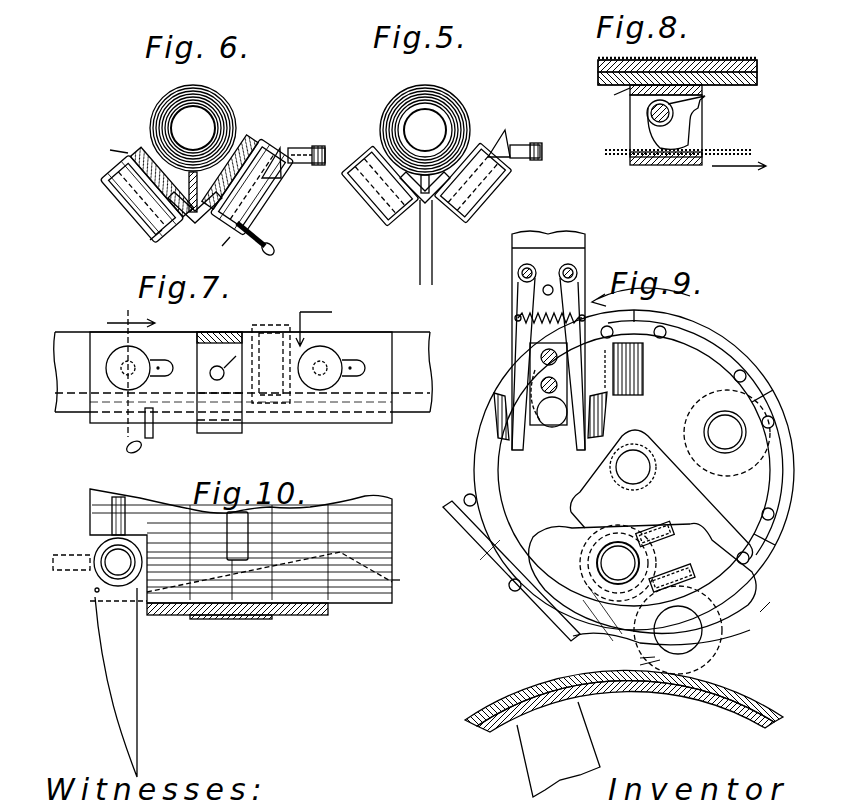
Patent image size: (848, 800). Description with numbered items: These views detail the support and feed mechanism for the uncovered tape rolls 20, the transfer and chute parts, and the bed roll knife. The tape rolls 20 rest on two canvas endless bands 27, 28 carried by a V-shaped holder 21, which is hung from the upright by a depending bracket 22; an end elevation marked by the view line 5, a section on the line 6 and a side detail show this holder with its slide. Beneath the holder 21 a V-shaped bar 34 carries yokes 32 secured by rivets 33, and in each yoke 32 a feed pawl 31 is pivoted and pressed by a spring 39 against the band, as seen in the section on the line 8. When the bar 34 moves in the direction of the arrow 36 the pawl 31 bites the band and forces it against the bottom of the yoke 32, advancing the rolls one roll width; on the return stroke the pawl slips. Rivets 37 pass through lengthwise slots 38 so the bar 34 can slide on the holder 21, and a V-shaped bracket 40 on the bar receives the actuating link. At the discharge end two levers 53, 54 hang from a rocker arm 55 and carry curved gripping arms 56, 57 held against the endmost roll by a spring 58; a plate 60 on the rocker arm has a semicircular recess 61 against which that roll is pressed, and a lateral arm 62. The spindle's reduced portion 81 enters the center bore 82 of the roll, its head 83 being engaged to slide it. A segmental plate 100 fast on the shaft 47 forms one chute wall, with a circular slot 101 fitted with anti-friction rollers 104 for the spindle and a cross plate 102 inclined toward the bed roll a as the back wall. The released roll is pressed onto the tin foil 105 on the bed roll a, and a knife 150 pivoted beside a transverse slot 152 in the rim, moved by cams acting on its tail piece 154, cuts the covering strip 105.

In FIG. 6, the tape rolls 20 is at (228, 106).
In FIG. 5, the tape rolls 20 is at (458, 106).
In FIG. 9, the tape rolls 20 is at (578, 533).
In FIG. 6, the center bore 82 is at (193, 128).
In FIG. 5, the center bore 82 is at (425, 130).
In FIG. 6, the V-shaped holder 21 is at (266, 136).
In FIG. 8, the V-shaped holder 21 is at (757, 70).
In FIG. 7, the V-shaped holder 21 is at (424, 378).
In FIG. 5, the depending bracket 22 is at (433, 257).
In FIG. 6, the endless band 27 is at (240, 150).
In FIG. 5, the endless band 27 is at (488, 198).
In FIG. 8, the endless band 27 is at (738, 58).
In FIG. 6, the endless band 28 is at (150, 150).
In FIG. 5, the endless band 28 is at (372, 212).
In FIG. 8, the feed pawl 31 is at (690, 130).
In FIG. 6, the yoke 32 is at (180, 244).
In FIG. 8, the yoke 32 is at (640, 165).
In FIG. 8, the rivets 33 is at (612, 98).
In FIG. 6, the V-shaped bar 34 is at (110, 144).
In FIG. 8, the V-shaped bar 34 is at (740, 88).
In FIG. 7, the V-shaped bar 34 is at (392, 349).
In FIG. 8, the arrow 36 is at (740, 167).
In FIG. 6, the rivets 37 is at (120, 203).
In FIG. 7, the rivets 37 is at (108, 364).
In FIG. 7, the slots 38 is at (368, 358).
In FIG. 8, the springs 39 is at (680, 104).
In FIG. 7, the V-shaped bracket 40 is at (220, 433).
In FIG. 7, the section line 5 is at (232, 357).
In FIG. 7, the section line 6— 6 is at (131, 376).
In FIG. 7, the section line 8— 8 is at (302, 355).
In FIG. 9, the shaft 47 is at (626, 470).
In FIG. 9, the lever 53 is at (528, 343).
In FIG. 9, the lever 54 is at (585, 300).
In FIG. 9, the rocker arm 55 is at (585, 237).
In FIG. 9, the gripping arm 56 is at (494, 404).
In FIG. 9, the gripping arm 57 is at (608, 410).
In FIG. 9, the spring 58 is at (516, 316).
In FIG. 9, the plate 60 is at (535, 385).
In FIG. 9, the semicircular recess 61 is at (548, 428).
In FIG. 9, the lateral arm 62 is at (643, 378).
In FIG. 9, the reduced portion 81 is at (620, 548).
In FIG. 9, the head 83 is at (698, 420).
In FIG. 9, the segmental plate 100 is at (700, 498).
In FIG. 9, the circular slot 101 is at (590, 530).
In FIG. 9, the cross plate 102 is at (475, 558).
In FIG. 9, the anti-friction rollers 104 is at (668, 514).
In FIG. 9, the tin foil 105 is at (530, 685).
In FIG. 10, the knife 150 is at (103, 645).
In FIG. 10, the transverse slot 152 is at (345, 603).
In FIG. 10, the tail piece 154 is at (112, 505).
In FIG. 10, the bed roll a is at (400, 580).